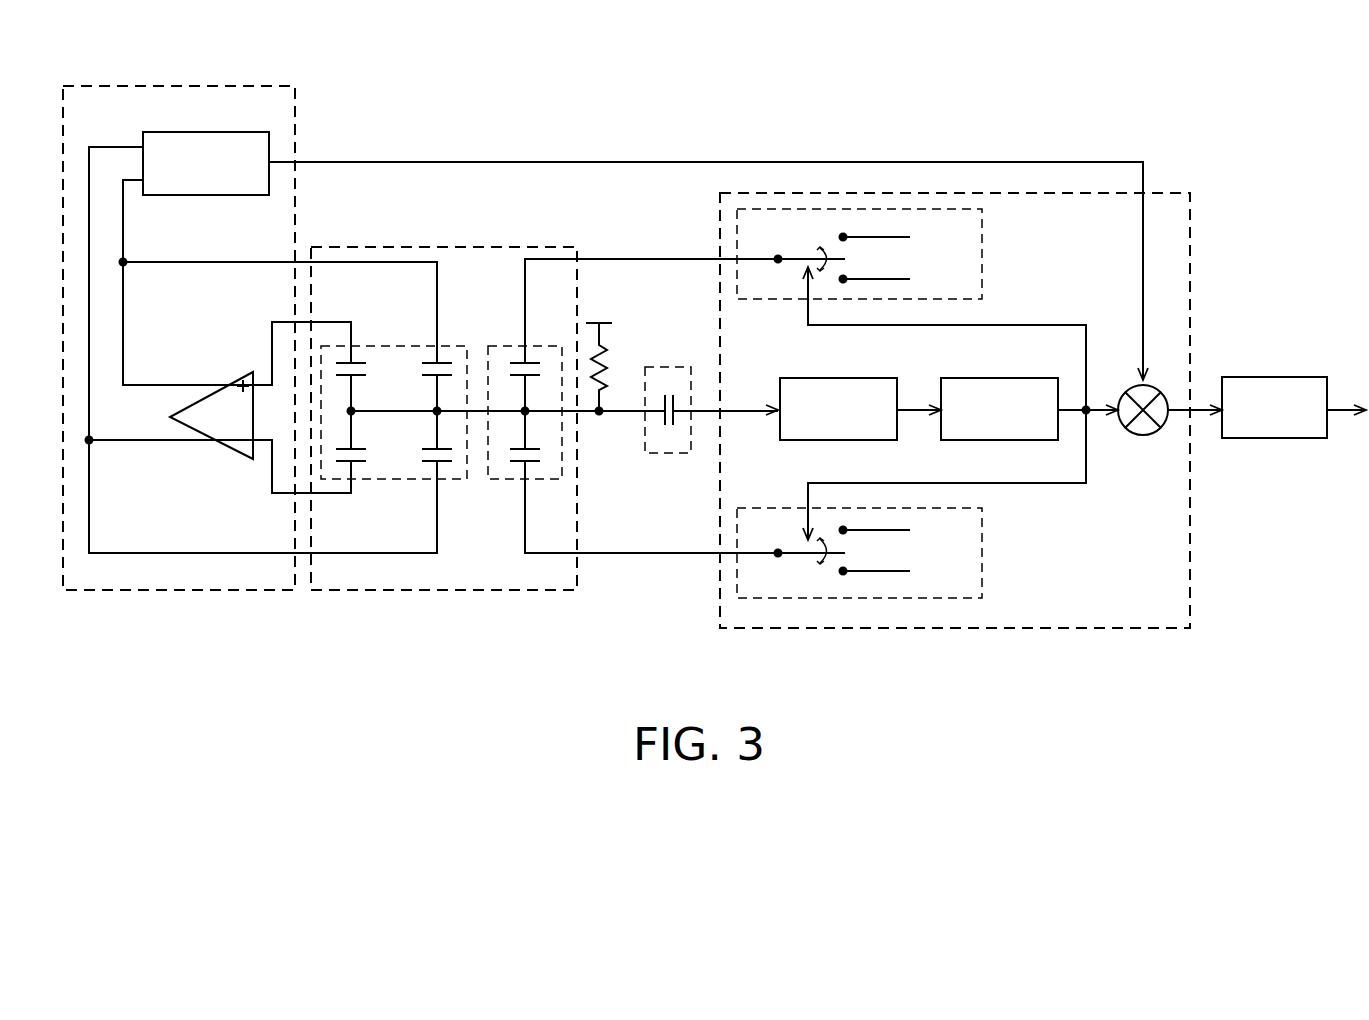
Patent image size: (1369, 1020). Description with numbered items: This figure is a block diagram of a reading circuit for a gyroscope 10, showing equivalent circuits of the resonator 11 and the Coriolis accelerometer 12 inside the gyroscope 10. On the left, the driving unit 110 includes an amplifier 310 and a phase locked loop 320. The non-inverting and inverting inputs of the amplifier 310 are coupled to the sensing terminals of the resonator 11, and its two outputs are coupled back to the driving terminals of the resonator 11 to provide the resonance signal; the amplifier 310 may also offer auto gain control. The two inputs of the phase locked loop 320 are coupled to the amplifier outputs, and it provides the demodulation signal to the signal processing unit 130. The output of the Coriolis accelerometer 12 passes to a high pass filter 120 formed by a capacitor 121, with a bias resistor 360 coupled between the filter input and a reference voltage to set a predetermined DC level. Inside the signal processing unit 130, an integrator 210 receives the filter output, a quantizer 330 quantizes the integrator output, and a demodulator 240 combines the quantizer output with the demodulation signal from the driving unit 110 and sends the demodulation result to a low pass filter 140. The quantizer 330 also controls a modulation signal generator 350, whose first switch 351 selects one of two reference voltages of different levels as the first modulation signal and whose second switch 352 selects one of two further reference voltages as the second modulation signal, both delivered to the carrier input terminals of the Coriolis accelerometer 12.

The gyroscope 10 is at (453, 590).
The resonator 11 is at (410, 480).
The Coriolis accelerometer 12 is at (552, 480).
The driving unit 110 is at (187, 590).
The high pass filter 120 is at (688, 417).
The capacitor 121 is at (670, 390).
The signal processing unit 130 is at (1070, 628).
The low pass filter 140 is at (1248, 377).
The integrator 210 is at (857, 378).
The demodulator 240 is at (1143, 435).
The amplifier 310 is at (240, 375).
The phase locked loop 320 is at (205, 132).
The quantizer 330 is at (1018, 378).
The modulation signal generator 350 is at (985, 258).
The first switch 351 is at (808, 246).
The second switch 352 is at (808, 560).
The bias resistor 360 is at (618, 380).